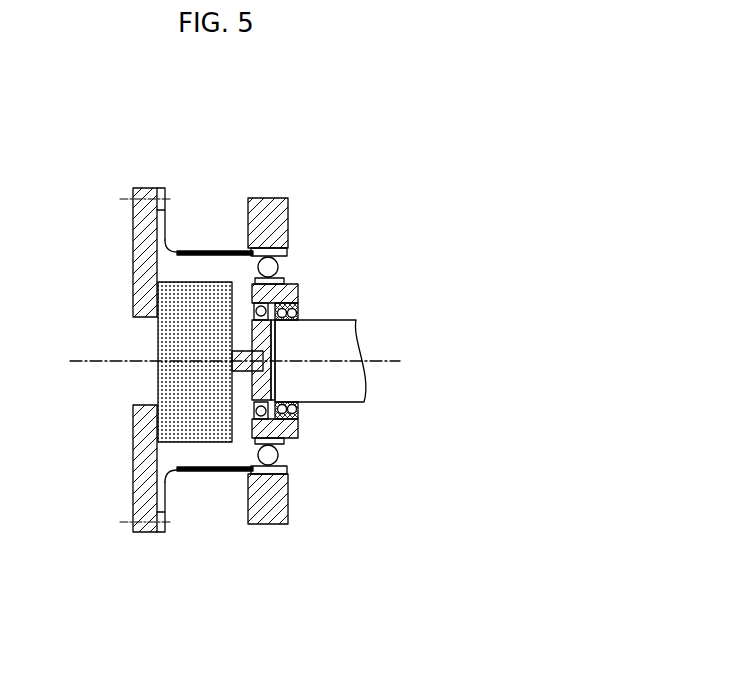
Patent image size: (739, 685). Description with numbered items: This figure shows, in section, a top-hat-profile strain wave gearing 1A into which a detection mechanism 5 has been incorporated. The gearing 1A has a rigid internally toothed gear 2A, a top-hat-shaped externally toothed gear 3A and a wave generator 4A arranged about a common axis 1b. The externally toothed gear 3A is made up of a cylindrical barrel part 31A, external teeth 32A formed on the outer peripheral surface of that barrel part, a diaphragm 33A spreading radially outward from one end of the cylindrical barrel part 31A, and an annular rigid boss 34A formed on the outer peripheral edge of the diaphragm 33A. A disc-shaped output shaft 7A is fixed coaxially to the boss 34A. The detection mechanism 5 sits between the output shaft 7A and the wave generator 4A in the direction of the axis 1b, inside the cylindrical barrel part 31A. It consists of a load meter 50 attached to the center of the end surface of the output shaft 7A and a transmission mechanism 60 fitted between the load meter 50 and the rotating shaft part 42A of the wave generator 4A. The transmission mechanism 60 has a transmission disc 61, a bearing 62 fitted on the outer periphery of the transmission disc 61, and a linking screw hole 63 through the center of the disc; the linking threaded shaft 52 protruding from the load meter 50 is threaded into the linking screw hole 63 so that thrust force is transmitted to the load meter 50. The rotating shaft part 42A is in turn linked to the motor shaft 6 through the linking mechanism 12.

The top-hat-profile strain wave gearing 1A is at (315, 298).
The axis 1b is at (90, 358).
The rigid internally toothed gear 2A is at (307, 344).
The top-hat-shaped externally toothed gear 3A is at (300, 251).
The wave generator 4A is at (330, 345).
The rotating shaft part 42A is at (292, 292).
The detection mechanism 5 is at (195, 447).
The load meter 50 is at (193, 447).
The linking threaded shaft 52 is at (257, 370).
The transmission mechanism 60 is at (243, 412).
The motor shaft 6 is at (350, 418).
The transmission disc 61 is at (276, 343).
The bearing 62 is at (278, 306).
The linking screw hole 63 is at (277, 377).
The linking mechanism 12 is at (308, 408).
The disc-shaped output shaft 7A is at (133, 240).
The cylindrical barrel part 31A is at (202, 250).
The external teeth 32A is at (263, 237).
The diaphragm 33A is at (185, 317).
The annular rigid boss 34A is at (163, 190).